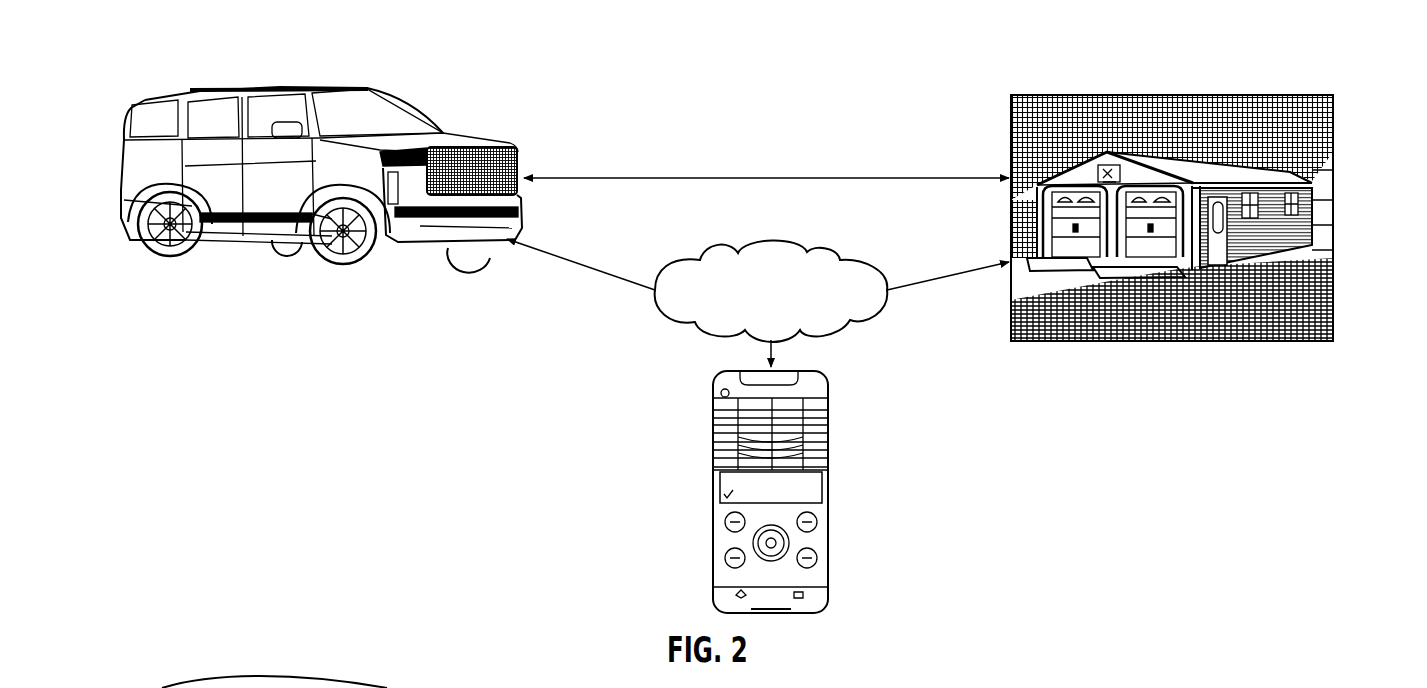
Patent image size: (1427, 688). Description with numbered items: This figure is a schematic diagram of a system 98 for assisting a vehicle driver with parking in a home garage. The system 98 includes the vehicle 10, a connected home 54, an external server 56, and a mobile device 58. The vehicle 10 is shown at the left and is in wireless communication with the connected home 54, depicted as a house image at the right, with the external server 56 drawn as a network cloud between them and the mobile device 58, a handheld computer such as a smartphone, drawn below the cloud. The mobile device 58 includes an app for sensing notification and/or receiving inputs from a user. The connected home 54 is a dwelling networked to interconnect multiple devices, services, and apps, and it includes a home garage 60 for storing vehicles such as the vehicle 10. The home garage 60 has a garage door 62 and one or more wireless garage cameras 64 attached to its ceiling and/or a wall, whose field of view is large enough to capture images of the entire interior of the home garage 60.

The vehicle 10 is at (457, 139).
The system 98 is at (770, 88).
The external server 56 is at (833, 252).
The mobile device 58 is at (830, 505).
The connected home 54 is at (1205, 214).
The home garage 60 is at (1311, 244).
The garage door 62 is at (1218, 341).
The wireless garage camera 64 is at (1118, 165).